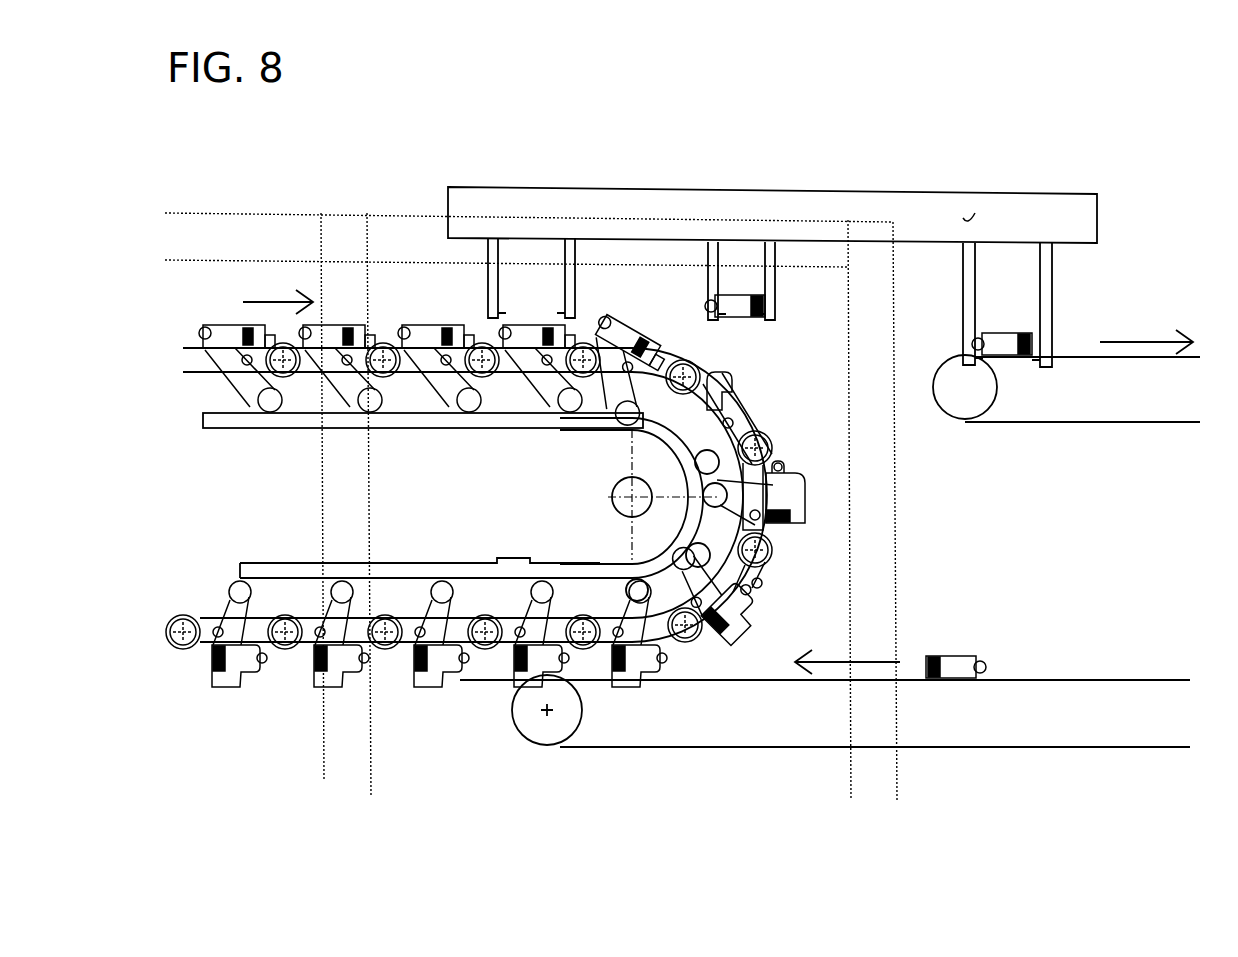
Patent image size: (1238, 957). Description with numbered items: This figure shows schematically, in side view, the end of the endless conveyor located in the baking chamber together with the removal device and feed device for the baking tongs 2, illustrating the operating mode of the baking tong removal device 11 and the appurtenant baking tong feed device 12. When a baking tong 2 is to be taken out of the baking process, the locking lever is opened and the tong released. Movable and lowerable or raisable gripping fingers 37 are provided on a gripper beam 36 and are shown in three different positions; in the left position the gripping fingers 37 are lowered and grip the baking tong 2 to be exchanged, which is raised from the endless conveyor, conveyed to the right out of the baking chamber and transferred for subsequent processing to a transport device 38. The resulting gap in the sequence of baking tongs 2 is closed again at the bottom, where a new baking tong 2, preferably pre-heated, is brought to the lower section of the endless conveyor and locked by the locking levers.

The baking tongs 2 is at (742, 310).
The baking tong removal device 11 is at (966, 210).
The baking tong feed device 12 is at (734, 730).
The gripper beam 36 is at (738, 203).
The gripping finger 37 is at (487, 273).
The transport device 38 is at (1121, 423).